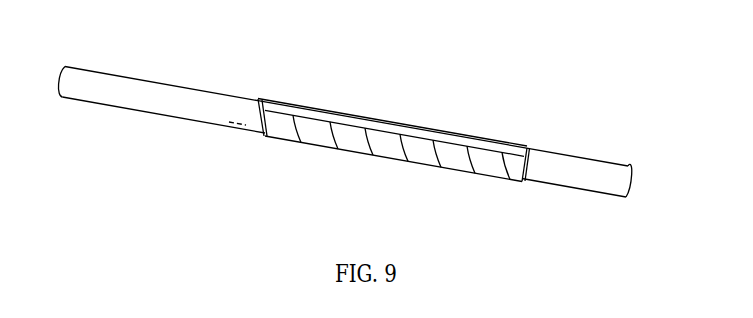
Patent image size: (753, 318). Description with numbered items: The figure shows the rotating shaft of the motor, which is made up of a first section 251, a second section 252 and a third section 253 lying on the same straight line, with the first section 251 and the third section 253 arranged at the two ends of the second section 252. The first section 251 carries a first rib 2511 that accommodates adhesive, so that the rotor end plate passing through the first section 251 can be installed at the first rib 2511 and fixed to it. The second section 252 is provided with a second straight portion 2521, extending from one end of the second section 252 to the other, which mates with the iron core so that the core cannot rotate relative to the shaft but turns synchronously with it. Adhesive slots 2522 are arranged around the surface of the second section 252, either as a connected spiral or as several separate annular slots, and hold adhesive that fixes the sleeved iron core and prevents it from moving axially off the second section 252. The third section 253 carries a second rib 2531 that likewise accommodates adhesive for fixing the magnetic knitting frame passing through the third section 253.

The first section 251 is at (165, 100).
The first rib 2511 is at (246, 102).
The second section 252 is at (437, 108).
The second straight portion 2521 is at (350, 118).
The adhesive slot 2522 is at (332, 133).
The second rib 2531 is at (540, 153).
The third section 253 is at (593, 172).